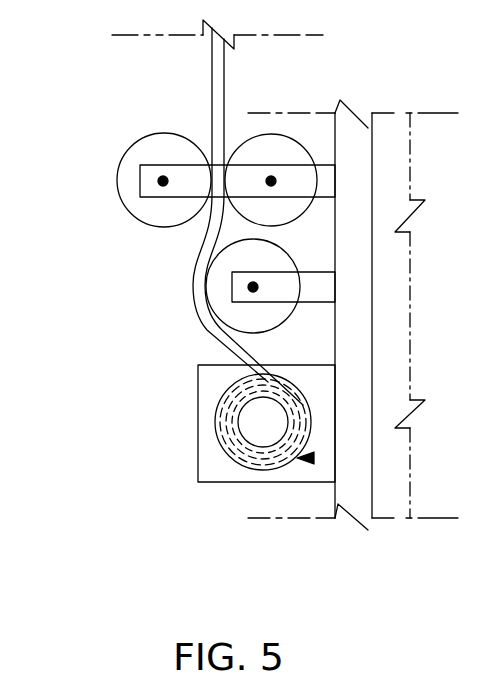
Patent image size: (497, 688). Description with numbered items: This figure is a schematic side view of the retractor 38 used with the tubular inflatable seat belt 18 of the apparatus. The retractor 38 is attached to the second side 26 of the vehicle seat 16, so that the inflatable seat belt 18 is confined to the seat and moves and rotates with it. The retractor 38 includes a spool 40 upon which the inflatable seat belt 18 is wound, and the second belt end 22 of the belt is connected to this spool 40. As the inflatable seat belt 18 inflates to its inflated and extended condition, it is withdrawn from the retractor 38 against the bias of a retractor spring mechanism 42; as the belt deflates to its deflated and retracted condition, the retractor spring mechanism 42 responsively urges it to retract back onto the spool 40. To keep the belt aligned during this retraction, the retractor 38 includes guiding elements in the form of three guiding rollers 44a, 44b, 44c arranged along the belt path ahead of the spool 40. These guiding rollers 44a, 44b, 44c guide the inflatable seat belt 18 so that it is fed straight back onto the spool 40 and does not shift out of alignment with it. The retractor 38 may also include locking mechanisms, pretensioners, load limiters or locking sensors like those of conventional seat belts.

The vehicle seat 16 is at (395, 143).
The inflatable seat belt 18 is at (212, 66).
The second belt end 22 is at (224, 88).
The second side 26 is at (407, 183).
The retractor 38 is at (350, 245).
The spool 40 is at (270, 407).
The retractor spring mechanism 42 is at (314, 458).
The guiding roller 44a is at (117, 181).
The guiding roller 44b is at (290, 134).
The guiding roller 44c is at (212, 290).